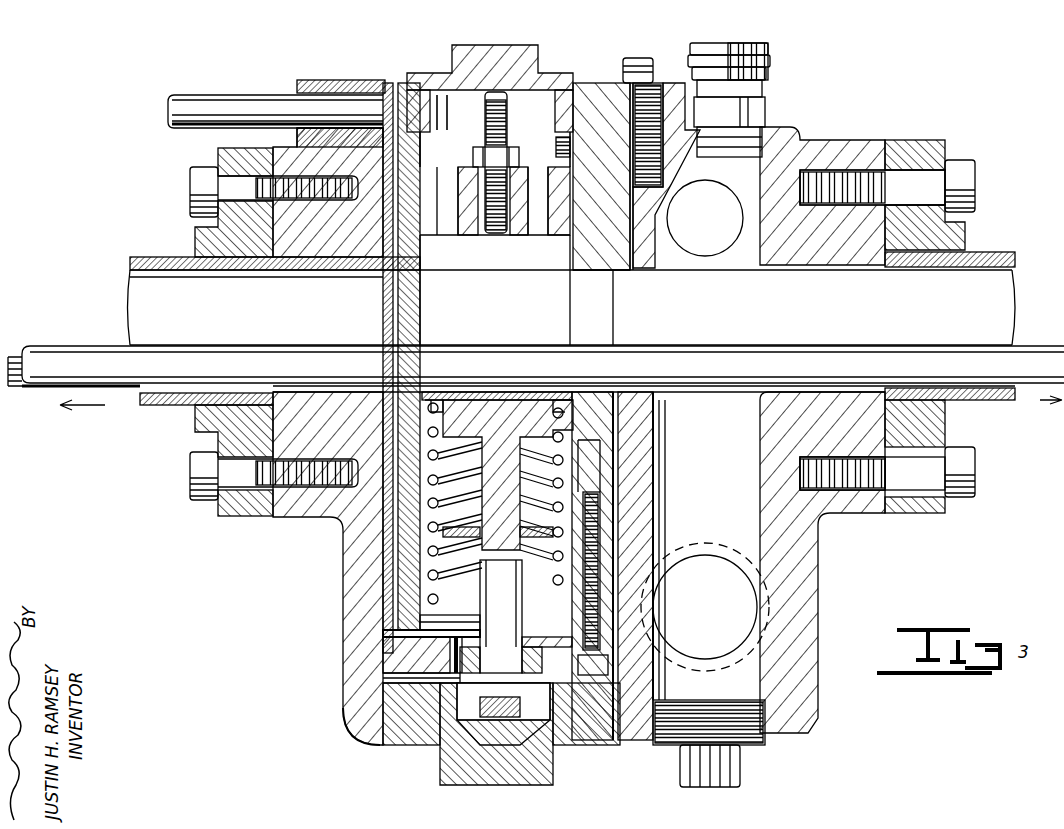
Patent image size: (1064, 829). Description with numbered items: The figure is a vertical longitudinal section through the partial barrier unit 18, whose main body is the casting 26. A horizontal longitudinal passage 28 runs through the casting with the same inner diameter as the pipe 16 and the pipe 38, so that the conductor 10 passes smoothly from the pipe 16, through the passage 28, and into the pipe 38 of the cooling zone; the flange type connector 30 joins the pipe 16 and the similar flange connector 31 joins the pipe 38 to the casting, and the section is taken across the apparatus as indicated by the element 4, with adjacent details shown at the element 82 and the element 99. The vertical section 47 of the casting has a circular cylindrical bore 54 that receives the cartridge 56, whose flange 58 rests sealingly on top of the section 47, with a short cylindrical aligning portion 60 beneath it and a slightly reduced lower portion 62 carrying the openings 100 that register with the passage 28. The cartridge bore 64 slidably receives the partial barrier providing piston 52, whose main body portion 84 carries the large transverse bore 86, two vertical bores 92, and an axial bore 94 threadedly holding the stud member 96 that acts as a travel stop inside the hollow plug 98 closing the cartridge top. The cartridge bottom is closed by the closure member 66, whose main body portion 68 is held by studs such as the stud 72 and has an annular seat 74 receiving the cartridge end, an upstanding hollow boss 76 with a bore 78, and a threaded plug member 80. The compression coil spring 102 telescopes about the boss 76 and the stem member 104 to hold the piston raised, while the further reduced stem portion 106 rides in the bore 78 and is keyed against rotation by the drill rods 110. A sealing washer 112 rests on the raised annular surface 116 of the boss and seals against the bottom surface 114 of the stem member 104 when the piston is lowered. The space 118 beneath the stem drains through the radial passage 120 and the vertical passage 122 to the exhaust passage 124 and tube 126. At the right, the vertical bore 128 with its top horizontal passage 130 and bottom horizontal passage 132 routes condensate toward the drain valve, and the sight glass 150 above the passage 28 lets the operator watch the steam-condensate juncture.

The shaft 4 is at (14, 352).
The conductor 10 is at (56, 396).
The pipe 16 is at (990, 254).
The unit 18 is at (882, 68).
The casting 26 is at (820, 140).
The horizontal longitudinal passage 28 is at (655, 268).
The flange type connector 30 is at (948, 142).
The flange connector 31 is at (195, 432).
The pipe 38 is at (130, 258).
The vertical section of casting 47 is at (343, 545).
The partial barrier providing piston 52 is at (538, 400).
The circular cylindrical bore 54 is at (383, 278).
The cartridge 56 is at (383, 318).
The flange 58 is at (590, 92).
The cylindrical aligning portion 60 is at (305, 135).
The lower portion of cartridge 62 is at (680, 395).
The circular cylindrical bore 64 is at (590, 400).
The closure member 66 is at (565, 724).
The main body portion of closure member 68 is at (383, 690).
The stud 72 is at (640, 548).
The annular seat 74 is at (654, 612).
The upstanding hollow boss 76 is at (450, 650).
The circular cylindrical bore 78 is at (425, 640).
The plug member 80 is at (492, 748).
The plug flange 82 is at (425, 748).
The main body portion of piston 84 is at (560, 270).
The large transverse bore 86 is at (486, 400).
The vertical bores 92 is at (447, 228).
The vertical axial bore 94 is at (490, 230).
The stud member 96 is at (508, 108).
The plug 98 is at (542, 50).
The plate 99 is at (412, 83).
The openings 100 is at (612, 272).
The compression coil spring 102 is at (578, 496).
The stem member 104 is at (474, 412).
The stem portion 106 is at (496, 590).
The drill rods 110 is at (602, 528).
The sealing washer 112 is at (430, 545).
The bottom surface 114 is at (560, 452).
The raised annular surface 116 is at (420, 600).
The space 118 is at (383, 748).
The radial passage 120 is at (362, 730).
The vertical passage 122 is at (380, 366).
The exhaust passage 124 is at (340, 80).
The tube 126 is at (214, 95).
The vertical bore 128 is at (760, 270).
The top horizontal passage 130 is at (714, 258).
The bottom horizontal passage 132 is at (740, 548).
The sight glass 150 is at (770, 74).